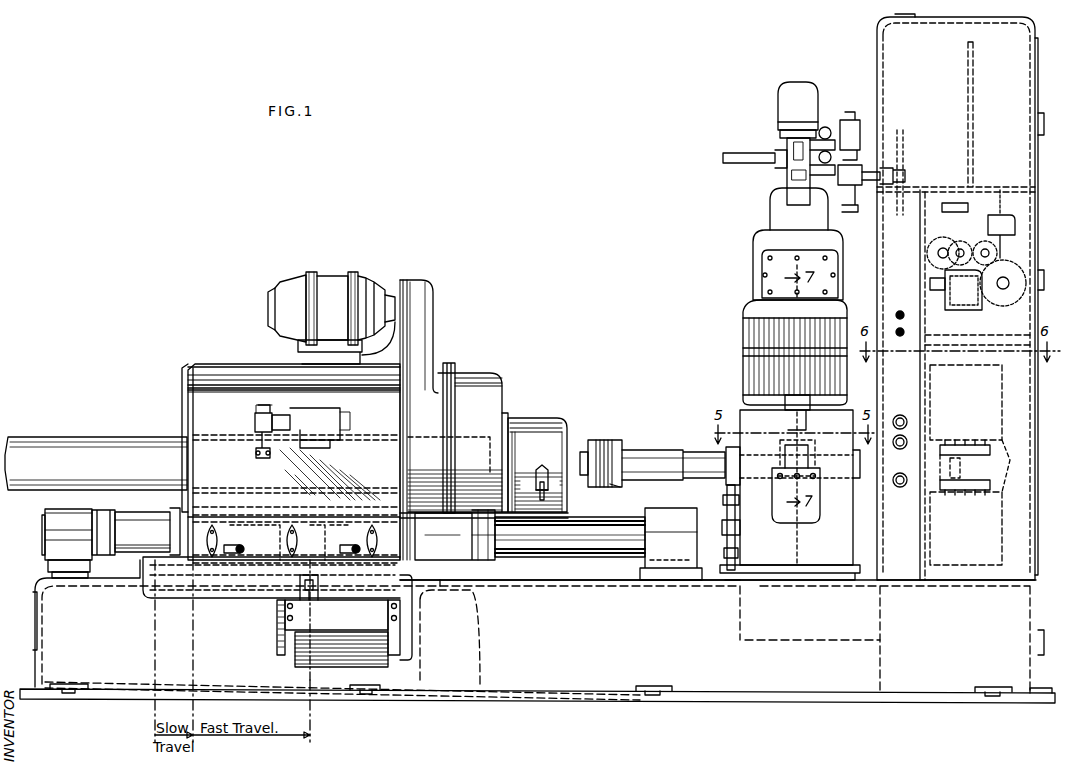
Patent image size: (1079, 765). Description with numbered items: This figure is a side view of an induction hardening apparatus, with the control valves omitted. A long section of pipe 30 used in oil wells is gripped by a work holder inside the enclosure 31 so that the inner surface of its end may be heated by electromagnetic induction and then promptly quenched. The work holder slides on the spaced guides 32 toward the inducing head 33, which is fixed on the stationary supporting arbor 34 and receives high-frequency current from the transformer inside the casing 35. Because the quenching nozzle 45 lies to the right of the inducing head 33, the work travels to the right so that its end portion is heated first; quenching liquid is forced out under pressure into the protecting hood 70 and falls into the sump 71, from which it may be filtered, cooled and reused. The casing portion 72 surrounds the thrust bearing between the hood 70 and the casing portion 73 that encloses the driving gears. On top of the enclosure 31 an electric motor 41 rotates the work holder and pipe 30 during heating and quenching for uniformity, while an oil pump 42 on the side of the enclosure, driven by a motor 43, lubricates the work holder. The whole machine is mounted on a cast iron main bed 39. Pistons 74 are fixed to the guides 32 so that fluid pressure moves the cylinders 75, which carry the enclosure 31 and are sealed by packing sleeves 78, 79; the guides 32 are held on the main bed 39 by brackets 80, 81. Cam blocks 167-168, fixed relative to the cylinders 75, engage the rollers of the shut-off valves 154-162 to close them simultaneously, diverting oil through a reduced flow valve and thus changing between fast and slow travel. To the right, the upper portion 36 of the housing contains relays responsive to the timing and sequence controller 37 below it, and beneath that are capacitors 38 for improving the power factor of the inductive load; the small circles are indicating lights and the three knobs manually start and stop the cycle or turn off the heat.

The pipe 30 is at (90, 440).
The enclosure 31 is at (218, 372).
The spaced guides 32 is at (614, 518).
The inducing head 33 is at (621, 442).
The supporting arbor 34 is at (698, 452).
The transformer casing 35 is at (742, 352).
The upper portion of the housing 36 is at (950, 105).
The timing and sequence controller 37 is at (978, 243).
The capacitors 38 is at (995, 450).
The main bed 39 is at (645, 663).
The electric motor 41 is at (332, 282).
The oil pump 42 is at (258, 420).
The motor 43 is at (328, 422).
The quenching nozzle 45 is at (620, 486).
The protecting hood 70 is at (545, 422).
The sump 71 is at (614, 588).
The casing portion 72 is at (486, 378).
The casing portion 73 is at (427, 303).
The pistons 74 is at (438, 560).
The cylinders 75 is at (180, 512).
The packing sleeve 78 is at (490, 560).
The packing sleeve 79 is at (140, 504).
The bracket 80 is at (672, 525).
The bracket 81 is at (56, 522).
The shut-off valves 154-162 is at (313, 606).
The cam blocks 167-168 is at (190, 575).